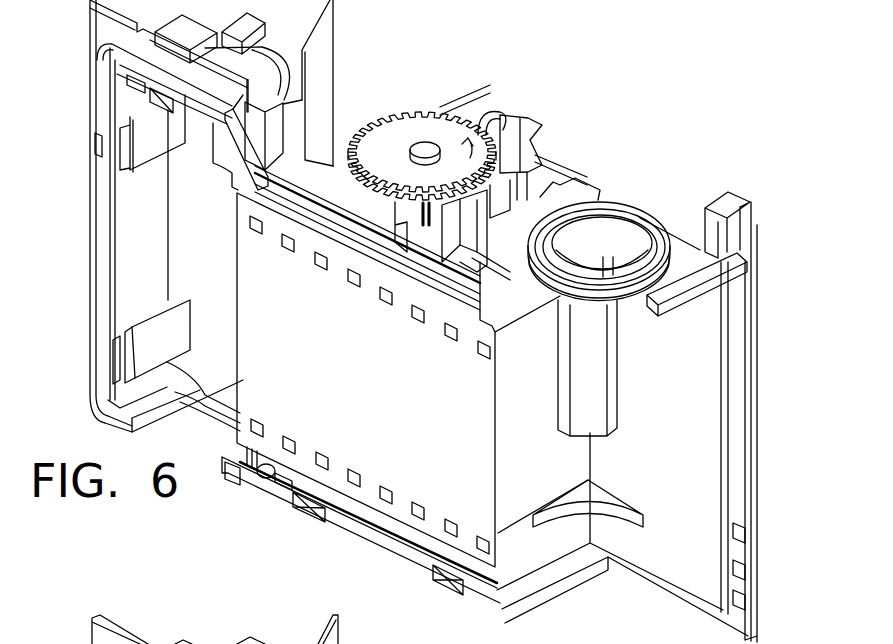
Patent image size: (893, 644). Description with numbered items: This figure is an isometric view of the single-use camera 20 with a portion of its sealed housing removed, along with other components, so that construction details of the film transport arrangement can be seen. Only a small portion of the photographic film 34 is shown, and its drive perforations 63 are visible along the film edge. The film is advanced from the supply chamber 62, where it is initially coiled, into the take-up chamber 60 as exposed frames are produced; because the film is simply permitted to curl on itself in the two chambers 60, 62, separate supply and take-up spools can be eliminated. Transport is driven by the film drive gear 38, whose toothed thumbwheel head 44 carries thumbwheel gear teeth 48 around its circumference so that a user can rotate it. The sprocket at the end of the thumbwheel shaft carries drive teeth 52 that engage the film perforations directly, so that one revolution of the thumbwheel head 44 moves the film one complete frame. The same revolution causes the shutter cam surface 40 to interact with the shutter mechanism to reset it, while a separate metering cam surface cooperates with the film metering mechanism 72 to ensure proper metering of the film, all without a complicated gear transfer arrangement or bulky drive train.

The single-use camera 20 is at (693, 97).
The photographic film 34 is at (498, 447).
The film drive gear 38 is at (392, 110).
The shutter cam surface 40 is at (402, 220).
The thumbwheel head 44 is at (437, 130).
The thumbwheel gear teeth 48 is at (440, 130).
The drive teeth 52 is at (388, 312).
The take-up chamber 60 is at (667, 530).
The supply chamber 62 is at (152, 252).
The drive perforations 63 is at (453, 340).
The film metering mechanism 72 is at (528, 106).